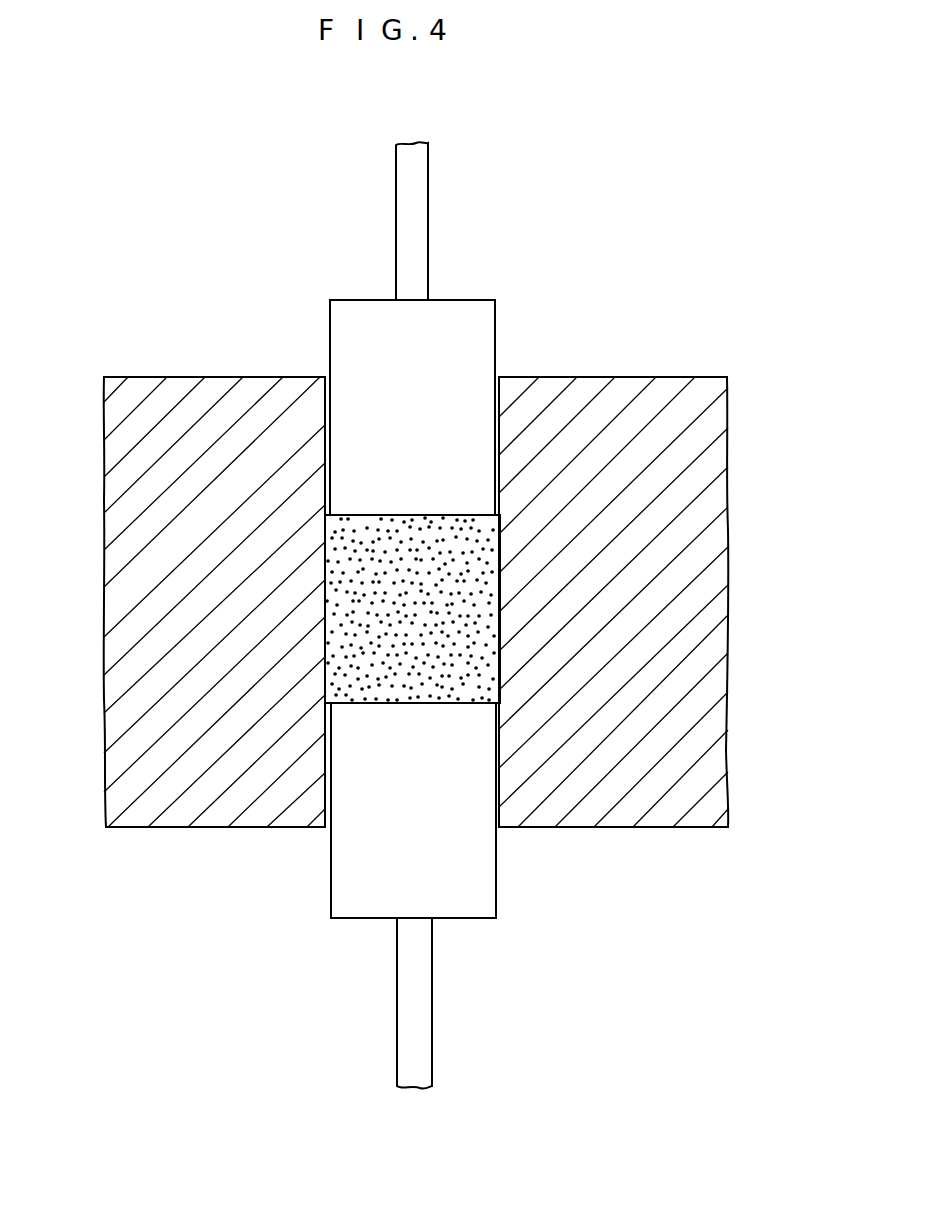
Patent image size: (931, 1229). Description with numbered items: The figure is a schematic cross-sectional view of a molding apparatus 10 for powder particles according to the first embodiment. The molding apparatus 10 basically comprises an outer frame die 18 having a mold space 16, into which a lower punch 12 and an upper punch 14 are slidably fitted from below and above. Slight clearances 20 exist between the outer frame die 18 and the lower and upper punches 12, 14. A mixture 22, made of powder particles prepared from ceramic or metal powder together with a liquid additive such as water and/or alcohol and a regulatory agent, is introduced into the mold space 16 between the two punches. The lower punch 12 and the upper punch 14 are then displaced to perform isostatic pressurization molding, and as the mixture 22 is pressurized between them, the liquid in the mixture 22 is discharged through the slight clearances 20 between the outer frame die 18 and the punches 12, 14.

The molding apparatus for powder particles 10 is at (577, 165).
The lower punch 12 is at (484, 905).
The upper punch 14 is at (337, 326).
The mold space 16 is at (502, 542).
The outer frame die 18 is at (697, 562).
The slight clearances 20 is at (328, 488).
The mixture 22 is at (348, 601).